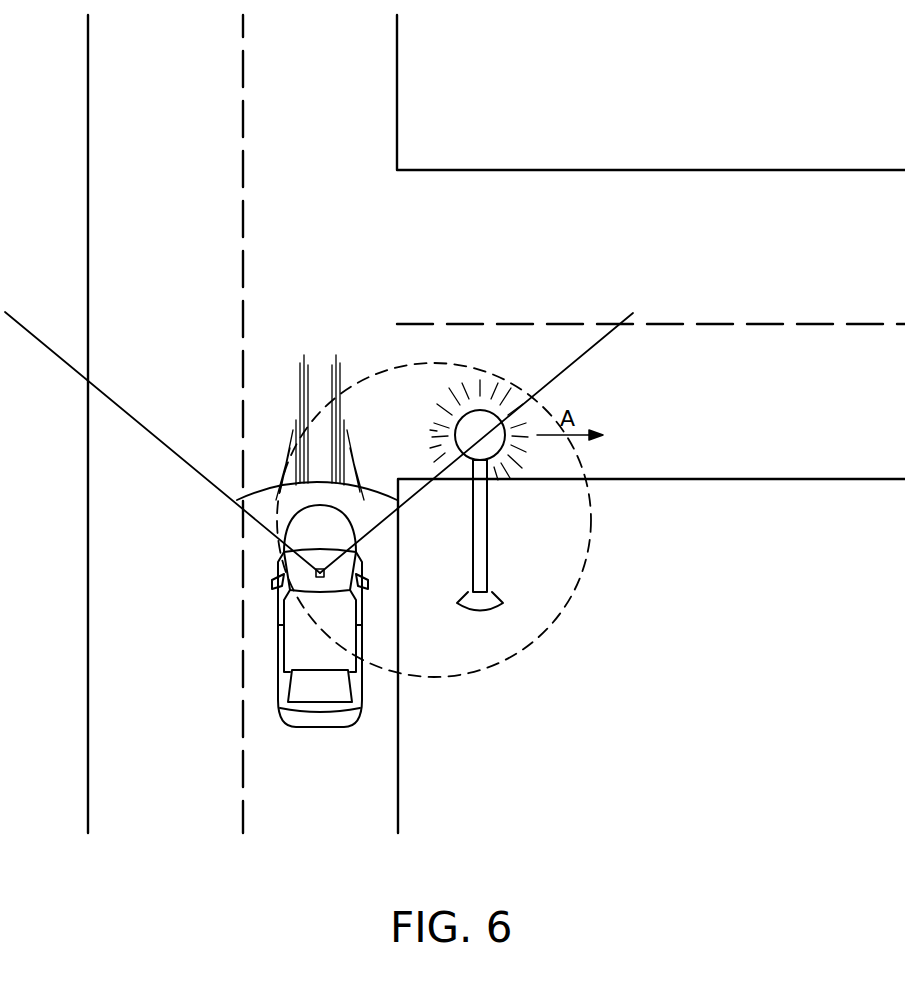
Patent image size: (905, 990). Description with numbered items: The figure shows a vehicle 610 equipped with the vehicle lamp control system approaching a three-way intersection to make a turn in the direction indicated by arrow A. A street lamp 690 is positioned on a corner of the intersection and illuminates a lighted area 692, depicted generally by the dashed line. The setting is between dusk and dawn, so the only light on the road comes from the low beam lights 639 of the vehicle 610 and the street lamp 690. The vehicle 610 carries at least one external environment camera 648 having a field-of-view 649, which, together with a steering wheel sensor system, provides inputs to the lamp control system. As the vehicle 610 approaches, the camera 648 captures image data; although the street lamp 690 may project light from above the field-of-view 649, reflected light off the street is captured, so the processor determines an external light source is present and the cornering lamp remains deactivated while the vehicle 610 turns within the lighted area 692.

The vehicle 610 is at (318, 727).
The external environment camera 648 is at (316, 574).
The low beam lights 639 is at (268, 417).
The field-of-view 649 is at (246, 499).
The street lamp 690 is at (487, 508).
The lighted area 692 is at (464, 534).